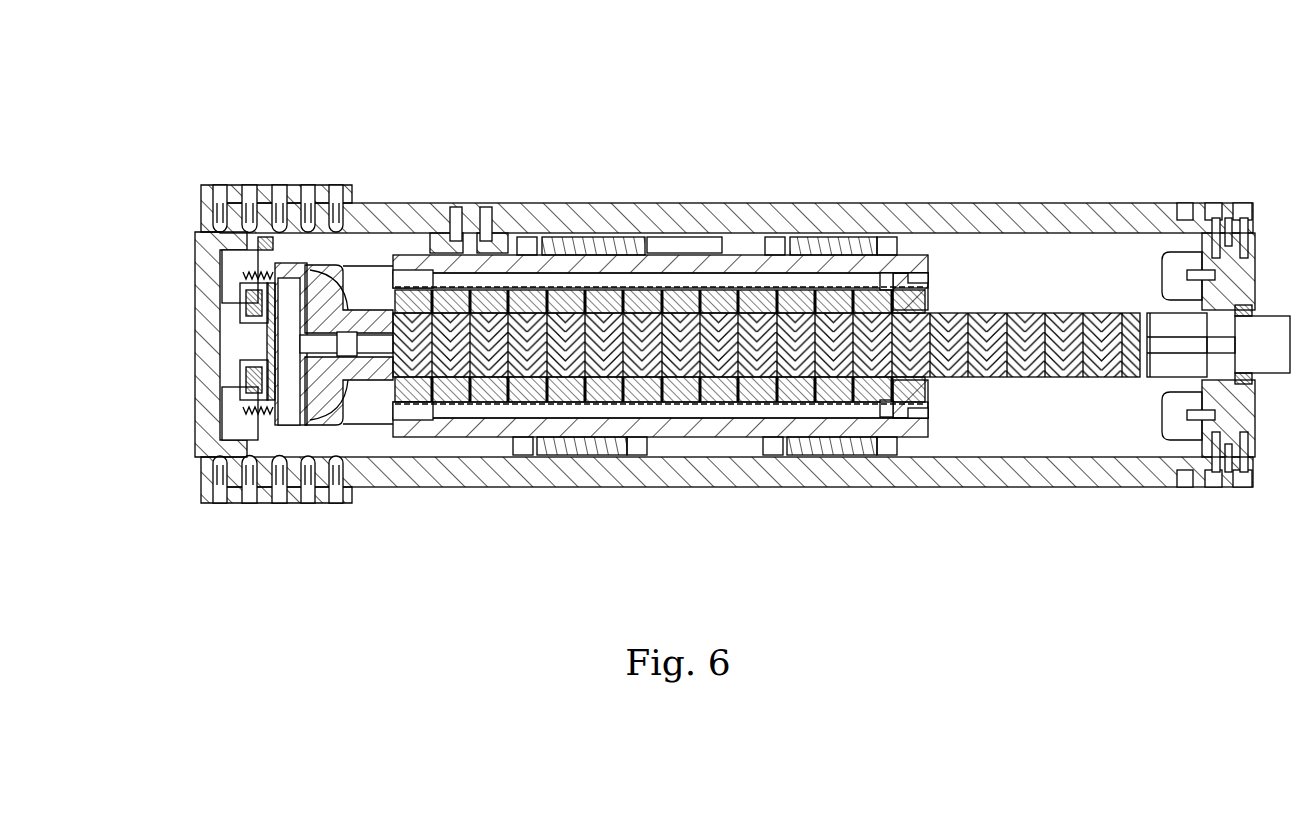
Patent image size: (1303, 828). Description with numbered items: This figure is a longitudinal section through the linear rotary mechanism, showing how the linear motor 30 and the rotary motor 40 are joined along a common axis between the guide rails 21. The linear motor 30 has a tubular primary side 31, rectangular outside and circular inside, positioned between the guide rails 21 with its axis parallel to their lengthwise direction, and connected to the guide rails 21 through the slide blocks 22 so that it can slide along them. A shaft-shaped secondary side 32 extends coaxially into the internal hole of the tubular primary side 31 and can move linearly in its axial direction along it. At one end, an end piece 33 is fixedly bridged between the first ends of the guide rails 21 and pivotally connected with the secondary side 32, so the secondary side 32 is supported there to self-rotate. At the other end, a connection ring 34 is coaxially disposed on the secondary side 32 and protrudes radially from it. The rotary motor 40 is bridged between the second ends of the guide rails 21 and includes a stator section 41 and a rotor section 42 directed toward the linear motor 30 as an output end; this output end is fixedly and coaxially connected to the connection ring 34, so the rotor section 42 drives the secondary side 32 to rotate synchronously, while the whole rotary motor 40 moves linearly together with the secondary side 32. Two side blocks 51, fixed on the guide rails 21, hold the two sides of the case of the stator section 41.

The guide rails 21 is at (935, 205).
The slide blocks 22 is at (561, 240).
The linear motor 30 is at (937, 272).
The tubular primary side 31 is at (722, 298).
The shaft-shaped secondary side 32 is at (1057, 313).
The end piece 33 is at (1248, 273).
The connection ring 34 is at (290, 268).
The rotary motor 40 is at (184, 392).
The stator section 41 is at (200, 240).
The rotor section 42 is at (258, 413).
The side blocks 51 is at (234, 190).